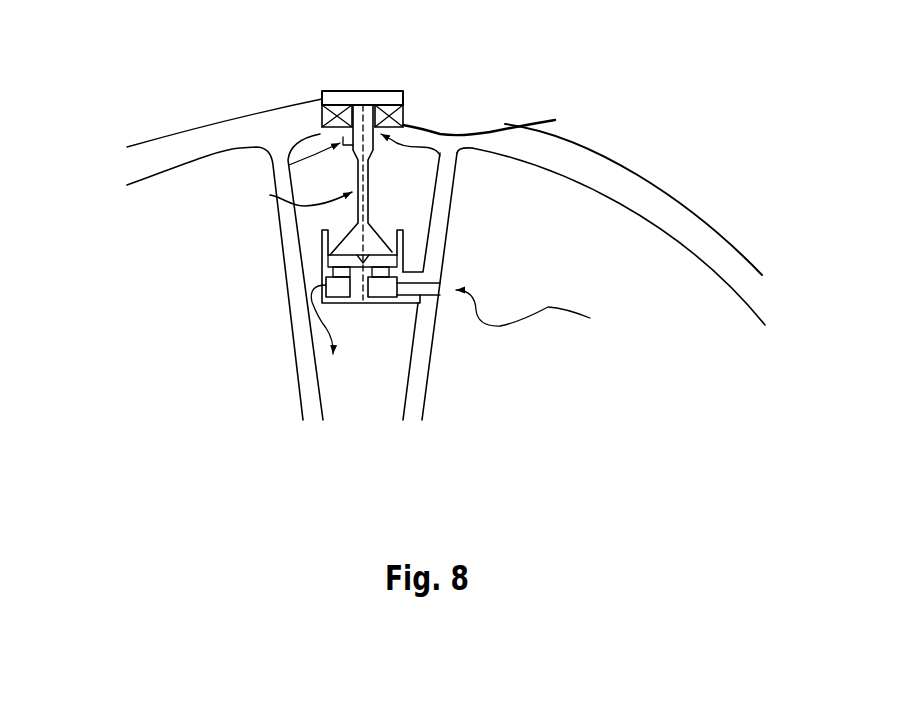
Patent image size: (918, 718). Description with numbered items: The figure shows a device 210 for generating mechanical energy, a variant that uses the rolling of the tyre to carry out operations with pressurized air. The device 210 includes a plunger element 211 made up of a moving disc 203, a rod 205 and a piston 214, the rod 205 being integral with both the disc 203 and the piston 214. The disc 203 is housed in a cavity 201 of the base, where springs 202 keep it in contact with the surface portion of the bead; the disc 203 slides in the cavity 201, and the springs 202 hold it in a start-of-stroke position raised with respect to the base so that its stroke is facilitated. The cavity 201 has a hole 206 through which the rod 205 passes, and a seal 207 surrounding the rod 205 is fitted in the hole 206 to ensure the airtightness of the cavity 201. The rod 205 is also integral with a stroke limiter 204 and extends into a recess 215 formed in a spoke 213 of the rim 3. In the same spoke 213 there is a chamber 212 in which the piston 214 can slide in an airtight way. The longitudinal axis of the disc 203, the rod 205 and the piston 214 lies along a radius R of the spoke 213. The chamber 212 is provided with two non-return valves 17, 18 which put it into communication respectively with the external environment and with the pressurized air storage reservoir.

The rim 3 is at (620, 159).
The non-return valve 17 is at (380, 270).
The non-return valve 18 is at (340, 270).
The cavity 201 is at (322, 115).
The springs 202 is at (403, 108).
The moving disc 203 is at (386, 97).
The stroke limiter 204 is at (274, 180).
The rod 205 is at (270, 195).
The hole 206 is at (344, 138).
The seal 207 is at (482, 150).
The device for generating mechanical energy 210 is at (390, 84).
The plunger element 211 is at (337, 87).
The chamber 212 is at (333, 263).
The spoke 213 is at (420, 383).
The piston 214 is at (380, 263).
The recess 215 is at (418, 225).
The radius R is at (363, 91).